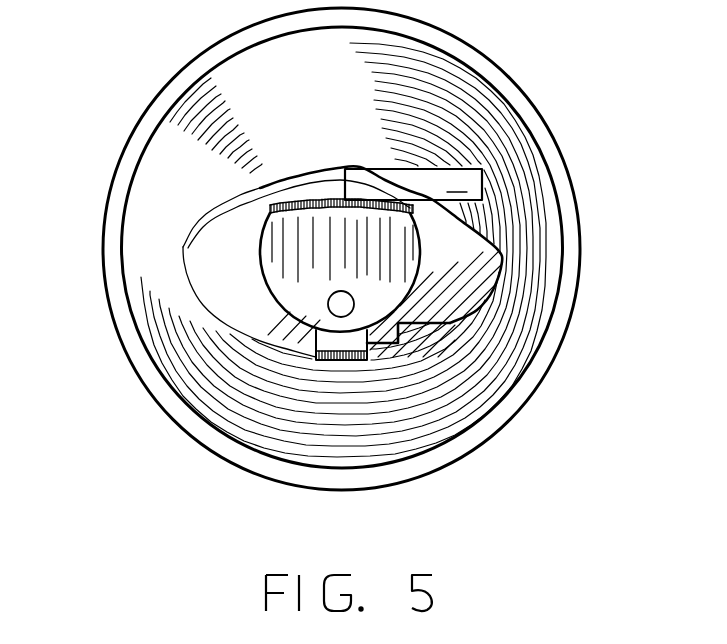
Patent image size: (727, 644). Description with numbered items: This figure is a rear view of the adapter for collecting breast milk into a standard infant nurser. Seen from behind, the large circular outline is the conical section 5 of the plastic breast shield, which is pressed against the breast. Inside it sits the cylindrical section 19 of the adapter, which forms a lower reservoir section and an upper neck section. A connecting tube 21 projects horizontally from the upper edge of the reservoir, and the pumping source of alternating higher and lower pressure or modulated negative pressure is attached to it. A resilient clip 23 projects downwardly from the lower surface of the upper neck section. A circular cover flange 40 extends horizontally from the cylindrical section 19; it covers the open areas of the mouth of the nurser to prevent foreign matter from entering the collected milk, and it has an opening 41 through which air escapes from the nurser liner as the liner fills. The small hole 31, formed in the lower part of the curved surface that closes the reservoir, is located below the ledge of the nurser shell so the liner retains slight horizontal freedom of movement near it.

The conical section 5 is at (134, 213).
The cylindrical section 19 is at (417, 278).
The connecting tube 21 is at (383, 170).
The resilient clip 23 is at (343, 361).
The hole 31 is at (328, 304).
The circular cover flange 40 is at (206, 268).
The opening 41 is at (416, 348).